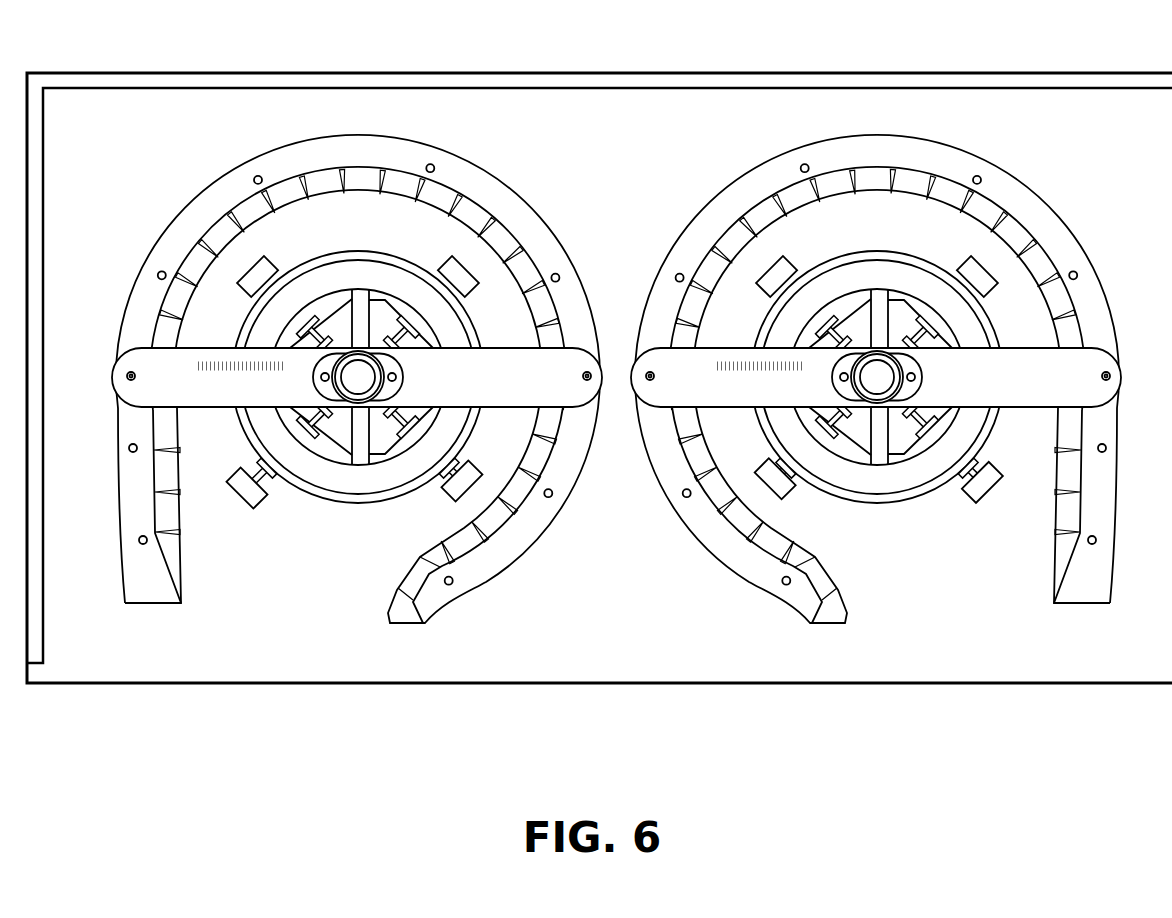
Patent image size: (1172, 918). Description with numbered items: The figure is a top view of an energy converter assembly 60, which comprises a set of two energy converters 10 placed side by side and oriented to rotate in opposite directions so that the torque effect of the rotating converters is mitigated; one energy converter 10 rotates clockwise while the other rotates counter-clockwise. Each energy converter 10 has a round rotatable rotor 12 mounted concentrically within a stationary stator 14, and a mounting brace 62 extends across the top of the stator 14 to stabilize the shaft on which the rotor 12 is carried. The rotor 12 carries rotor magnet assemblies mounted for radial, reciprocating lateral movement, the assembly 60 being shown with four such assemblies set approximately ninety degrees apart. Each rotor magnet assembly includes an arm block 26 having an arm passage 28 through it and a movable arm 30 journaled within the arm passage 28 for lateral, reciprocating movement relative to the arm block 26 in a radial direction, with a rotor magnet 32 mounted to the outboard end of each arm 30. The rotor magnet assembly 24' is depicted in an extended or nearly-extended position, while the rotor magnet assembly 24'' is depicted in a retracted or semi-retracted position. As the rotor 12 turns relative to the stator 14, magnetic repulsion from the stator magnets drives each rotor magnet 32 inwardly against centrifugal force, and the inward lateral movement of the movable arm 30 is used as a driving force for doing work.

The energy converter 10 is at (495, 160).
The rotor 12 is at (333, 485).
The stator 14 is at (483, 568).
The rotor magnet assembly 24' is at (254, 517).
The rotor magnet assembly 24'' is at (507, 531).
The arm block 26 is at (347, 307).
The arm passage 28 is at (308, 333).
The movable arm 30 is at (333, 307).
The rotor magnet 32 is at (247, 280).
The energy converter assembly 60 is at (653, 52).
The mounting brace 62 is at (539, 375).